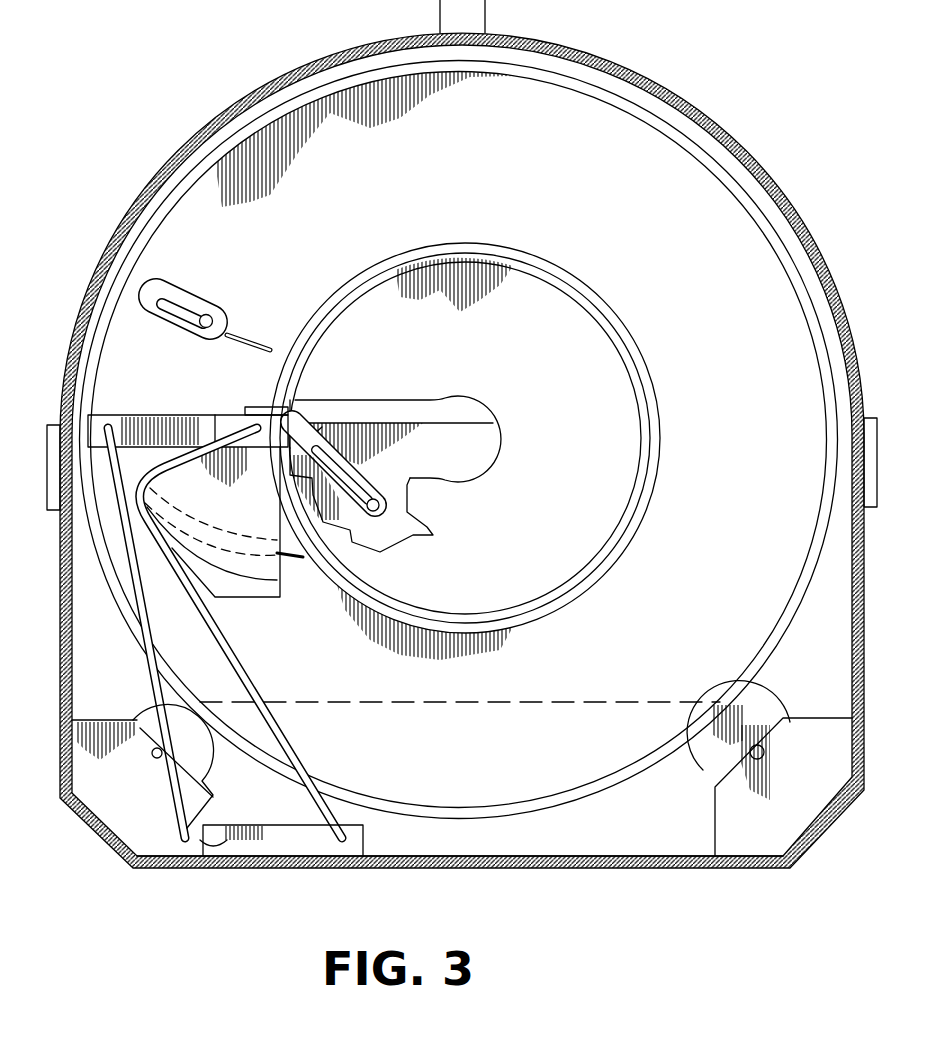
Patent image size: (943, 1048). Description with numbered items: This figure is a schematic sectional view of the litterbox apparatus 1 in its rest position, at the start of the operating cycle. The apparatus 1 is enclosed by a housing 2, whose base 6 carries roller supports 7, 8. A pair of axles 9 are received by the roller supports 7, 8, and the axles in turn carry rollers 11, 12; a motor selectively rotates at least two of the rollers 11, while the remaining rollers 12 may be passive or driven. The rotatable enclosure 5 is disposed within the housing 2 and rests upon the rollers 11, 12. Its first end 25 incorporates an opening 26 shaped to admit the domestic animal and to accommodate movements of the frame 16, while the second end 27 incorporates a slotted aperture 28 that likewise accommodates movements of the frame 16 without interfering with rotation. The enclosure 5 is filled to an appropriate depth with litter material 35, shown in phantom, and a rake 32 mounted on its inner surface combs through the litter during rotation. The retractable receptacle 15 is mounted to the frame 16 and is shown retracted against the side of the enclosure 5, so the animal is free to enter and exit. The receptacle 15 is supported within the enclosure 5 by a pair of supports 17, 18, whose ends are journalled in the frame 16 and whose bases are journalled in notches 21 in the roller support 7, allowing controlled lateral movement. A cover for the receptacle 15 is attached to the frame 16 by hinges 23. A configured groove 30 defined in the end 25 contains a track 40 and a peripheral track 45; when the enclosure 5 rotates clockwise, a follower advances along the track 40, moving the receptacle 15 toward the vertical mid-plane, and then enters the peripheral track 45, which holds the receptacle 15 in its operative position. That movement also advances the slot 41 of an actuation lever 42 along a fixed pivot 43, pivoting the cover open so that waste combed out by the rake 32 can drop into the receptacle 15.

The apparatus 1 is at (215, 97).
The housing 2 is at (770, 163).
The enclosure 5 is at (769, 661).
The base 6 is at (636, 868).
The roller support 7 is at (80, 740).
The roller support 8 is at (843, 752).
The axle 9 is at (155, 758).
The roller 11 is at (142, 723).
The roller 12 is at (712, 765).
The retractable receptacle 15 is at (261, 520).
The frame 16 is at (183, 420).
The support 17 is at (148, 660).
The support 18 is at (248, 687).
The notch 21 is at (235, 830).
The hinge 23 is at (258, 407).
The first end 25 is at (775, 294).
The opening 26 is at (567, 535).
The second end 27 is at (583, 330).
The slotted aperture 28 is at (500, 453).
The configured groove 30 is at (308, 590).
The rake 32 is at (233, 330).
The litter material 35 is at (530, 732).
The track 40 is at (218, 520).
The slot 41 is at (377, 467).
The actuation lever 42 is at (325, 412).
The fixed pivot 43 is at (410, 533).
The peripheral track 45 is at (483, 645).